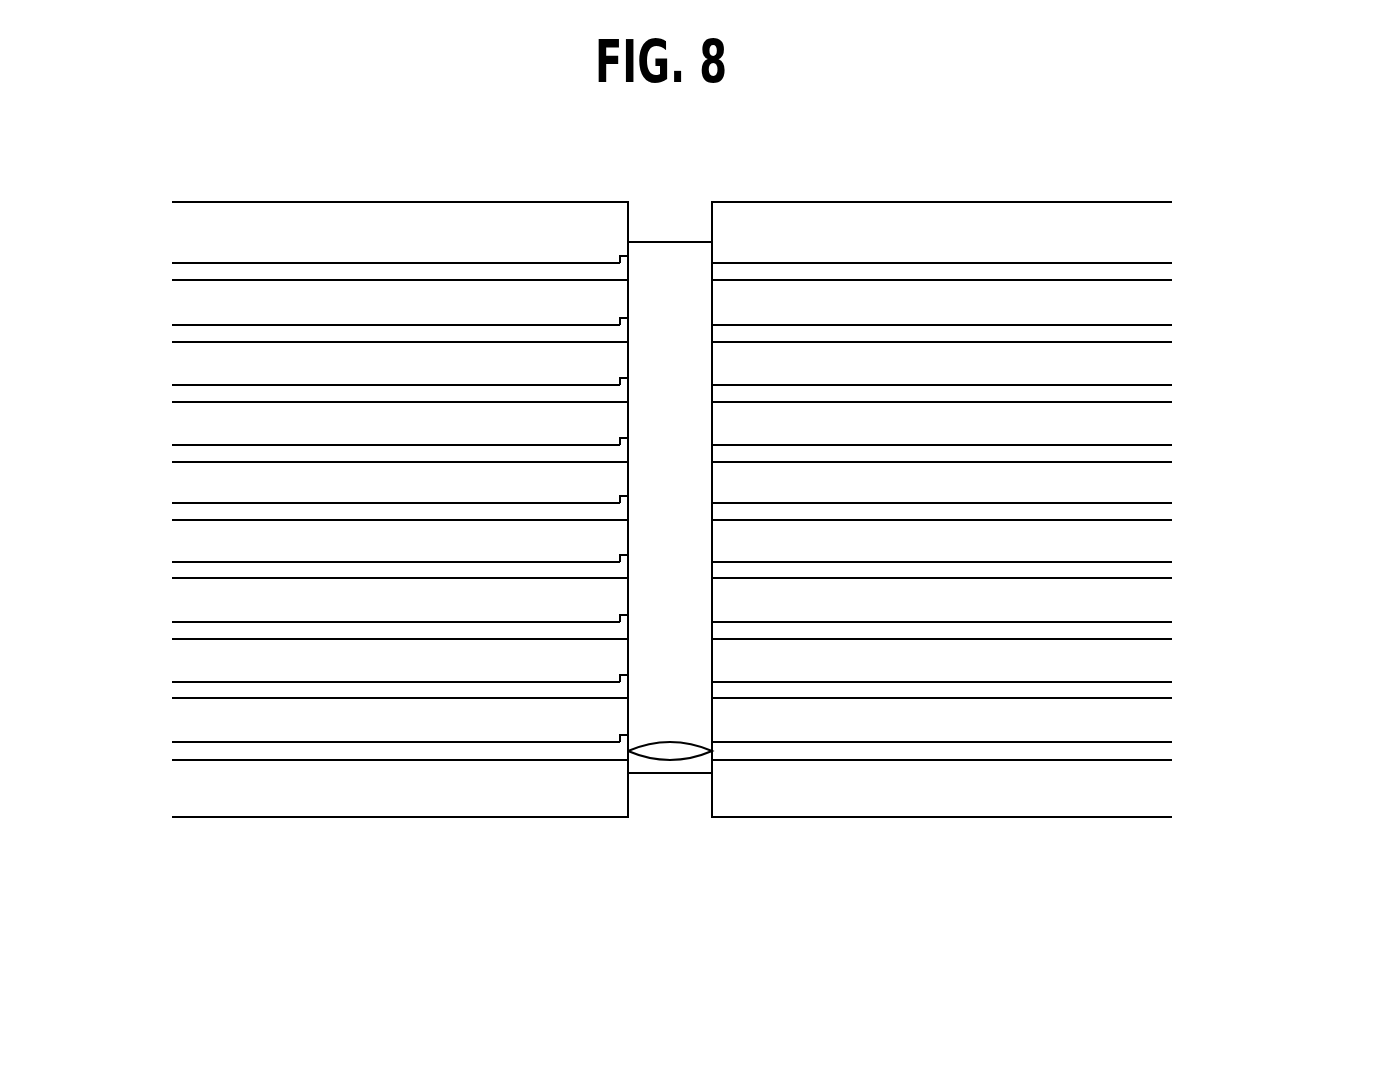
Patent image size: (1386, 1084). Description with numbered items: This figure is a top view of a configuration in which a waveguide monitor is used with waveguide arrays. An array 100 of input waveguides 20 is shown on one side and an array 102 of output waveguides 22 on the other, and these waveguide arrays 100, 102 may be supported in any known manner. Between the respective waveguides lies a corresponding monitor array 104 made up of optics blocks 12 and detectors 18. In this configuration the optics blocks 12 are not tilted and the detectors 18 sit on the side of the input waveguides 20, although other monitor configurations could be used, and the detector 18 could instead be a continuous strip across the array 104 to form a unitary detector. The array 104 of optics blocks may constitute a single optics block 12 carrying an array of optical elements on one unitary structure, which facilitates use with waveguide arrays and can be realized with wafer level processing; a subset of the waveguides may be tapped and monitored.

The array of input waveguides 100 is at (163, 230).
The array of output waveguides 102 is at (1248, 294).
The monitor array 104 is at (690, 143).
The detector 18 is at (638, 241).
The optics block 12 is at (685, 317).
The input waveguide 20 is at (196, 281).
The output waveguide 22 is at (1165, 273).